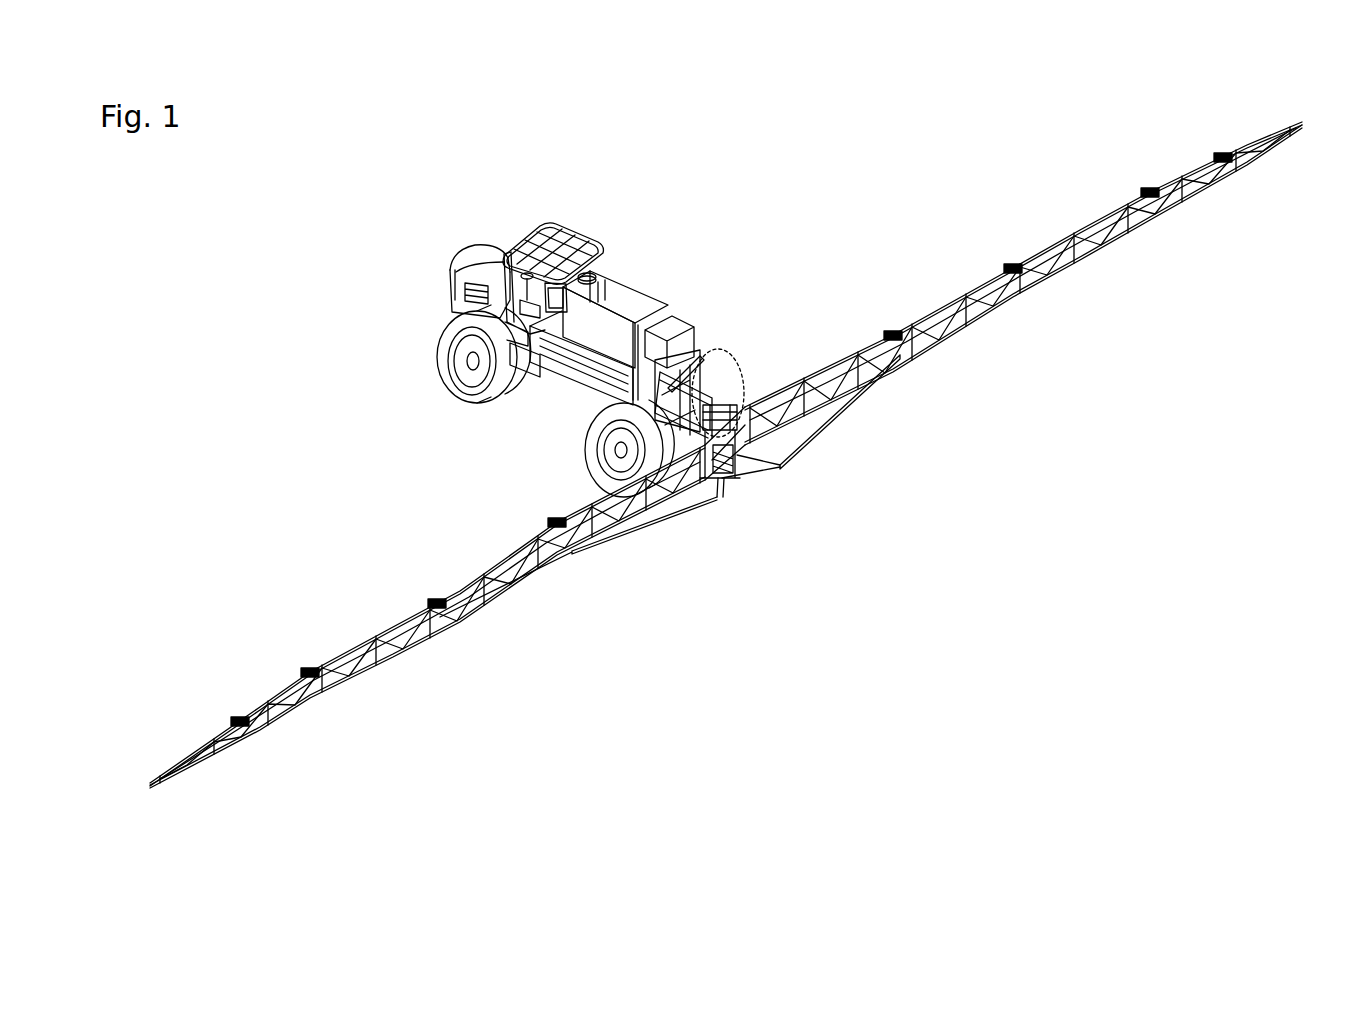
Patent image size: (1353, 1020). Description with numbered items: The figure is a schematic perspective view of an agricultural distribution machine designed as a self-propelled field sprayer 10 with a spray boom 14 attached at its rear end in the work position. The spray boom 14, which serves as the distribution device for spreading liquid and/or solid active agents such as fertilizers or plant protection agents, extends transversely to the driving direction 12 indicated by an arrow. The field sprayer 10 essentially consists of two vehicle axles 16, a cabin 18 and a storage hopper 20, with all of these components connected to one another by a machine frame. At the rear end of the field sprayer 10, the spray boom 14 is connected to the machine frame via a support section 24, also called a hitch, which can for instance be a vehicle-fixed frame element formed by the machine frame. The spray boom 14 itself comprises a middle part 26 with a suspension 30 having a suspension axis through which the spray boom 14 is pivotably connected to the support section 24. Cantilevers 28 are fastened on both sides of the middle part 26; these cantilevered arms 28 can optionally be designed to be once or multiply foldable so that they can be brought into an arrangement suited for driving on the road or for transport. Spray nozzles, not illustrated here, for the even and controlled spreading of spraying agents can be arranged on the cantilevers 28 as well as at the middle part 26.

The field sprayer 10 is at (513, 176).
The driving direction 12 is at (708, 155).
The spray boom 14 is at (860, 456).
The vehicle axles 16 is at (452, 384).
The cabin 18 is at (585, 240).
The storage hopper 20 is at (652, 289).
The support section 24 is at (722, 386).
The middle part 26 is at (729, 465).
The cantilevers 28 is at (962, 331).
The suspension 30 is at (742, 449).